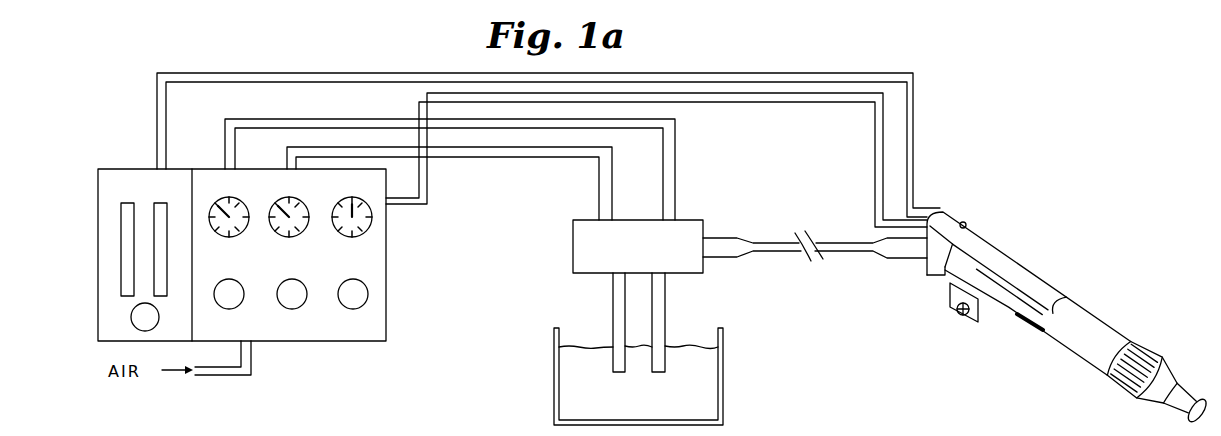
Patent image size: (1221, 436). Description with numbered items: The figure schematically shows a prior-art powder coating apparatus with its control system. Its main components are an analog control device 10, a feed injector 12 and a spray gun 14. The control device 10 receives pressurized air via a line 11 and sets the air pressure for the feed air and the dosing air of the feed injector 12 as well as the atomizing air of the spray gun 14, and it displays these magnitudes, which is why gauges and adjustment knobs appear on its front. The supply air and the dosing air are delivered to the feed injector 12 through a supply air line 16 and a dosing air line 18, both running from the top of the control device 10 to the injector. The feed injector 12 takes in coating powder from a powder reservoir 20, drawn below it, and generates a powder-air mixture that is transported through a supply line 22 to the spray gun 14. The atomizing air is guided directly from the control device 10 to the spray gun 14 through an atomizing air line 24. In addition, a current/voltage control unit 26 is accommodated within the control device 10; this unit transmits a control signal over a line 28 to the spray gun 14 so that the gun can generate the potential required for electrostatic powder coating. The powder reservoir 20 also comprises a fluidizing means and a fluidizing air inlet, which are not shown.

The analog control device 10 is at (386, 274).
The line 11 is at (215, 375).
The feed injector 12 is at (575, 240).
The spray gun 14 is at (1013, 262).
The supply air line 16 is at (673, 188).
The dosing air line 18 is at (612, 207).
The powder reservoir 20 is at (717, 387).
The supply line 22 is at (733, 240).
The atomizing air line 24 is at (752, 102).
The current/voltage control unit 26 is at (98, 240).
The line 28 is at (327, 73).